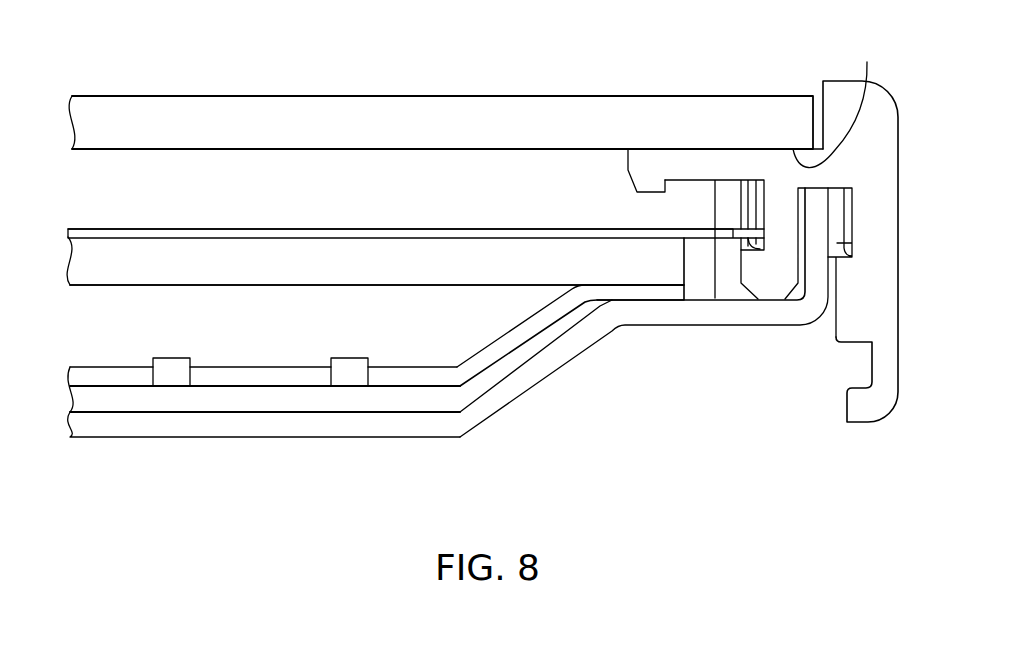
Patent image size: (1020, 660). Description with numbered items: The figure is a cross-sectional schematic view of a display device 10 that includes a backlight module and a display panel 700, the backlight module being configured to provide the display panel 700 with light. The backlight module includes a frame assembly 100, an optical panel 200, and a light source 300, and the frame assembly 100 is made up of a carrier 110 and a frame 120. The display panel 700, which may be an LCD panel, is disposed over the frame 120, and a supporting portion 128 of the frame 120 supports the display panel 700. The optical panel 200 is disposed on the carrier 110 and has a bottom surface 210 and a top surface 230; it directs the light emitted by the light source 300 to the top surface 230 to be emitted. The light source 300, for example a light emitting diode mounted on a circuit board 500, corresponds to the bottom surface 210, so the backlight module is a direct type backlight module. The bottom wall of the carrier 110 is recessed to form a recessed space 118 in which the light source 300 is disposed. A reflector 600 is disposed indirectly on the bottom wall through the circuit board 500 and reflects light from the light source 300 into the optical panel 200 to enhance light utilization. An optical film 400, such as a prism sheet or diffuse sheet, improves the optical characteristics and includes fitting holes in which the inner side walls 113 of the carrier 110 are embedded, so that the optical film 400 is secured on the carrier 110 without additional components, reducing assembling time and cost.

The display device 10 is at (183, 42).
The display panel 700 is at (288, 123).
The supporting portion 128 is at (843, 98).
The top surface 230 is at (134, 229).
The bottom surface 210 is at (134, 285).
The optical film 400 is at (215, 239).
The optical panel 200 is at (290, 262).
The light source 300 is at (174, 380).
The circuit board 500 is at (240, 396).
The reflector 600 is at (292, 375).
The recessed space 118 is at (493, 337).
The inner side wall 113 is at (725, 300).
The carrier 110 is at (782, 312).
The frame 120 is at (858, 408).
The frame assembly 100 is at (893, 485).